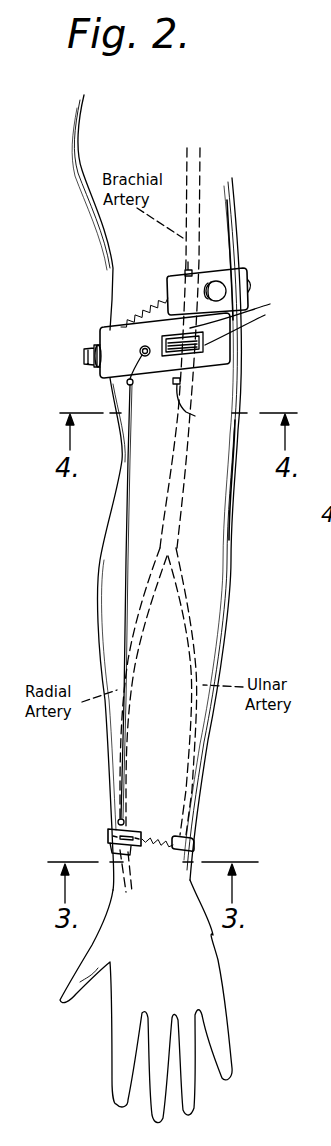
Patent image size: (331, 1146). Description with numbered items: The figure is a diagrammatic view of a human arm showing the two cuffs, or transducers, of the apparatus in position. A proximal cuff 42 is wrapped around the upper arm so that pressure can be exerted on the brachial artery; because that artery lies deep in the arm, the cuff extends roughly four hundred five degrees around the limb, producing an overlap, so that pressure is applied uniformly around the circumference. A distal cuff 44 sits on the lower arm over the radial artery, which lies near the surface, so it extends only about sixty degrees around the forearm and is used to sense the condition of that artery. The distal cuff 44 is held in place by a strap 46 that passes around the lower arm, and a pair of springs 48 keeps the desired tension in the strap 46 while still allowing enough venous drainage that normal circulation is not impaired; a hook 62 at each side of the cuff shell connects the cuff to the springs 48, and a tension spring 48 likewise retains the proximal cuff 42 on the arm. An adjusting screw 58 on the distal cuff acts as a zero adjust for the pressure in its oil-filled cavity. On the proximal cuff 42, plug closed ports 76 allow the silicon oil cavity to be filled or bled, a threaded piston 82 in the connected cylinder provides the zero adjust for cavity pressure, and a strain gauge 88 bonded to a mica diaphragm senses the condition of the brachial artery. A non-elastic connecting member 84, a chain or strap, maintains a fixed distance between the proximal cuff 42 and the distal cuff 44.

The proximal cuff 42 is at (163, 390).
The distal cuff 44 is at (140, 820).
The strap 46 is at (194, 845).
The springs 48 is at (137, 316).
The adjusting screw 58 is at (113, 847).
The hook 62 is at (172, 292).
The plug closed ports 76 is at (190, 270).
The piston 82 is at (133, 383).
The non-elastic connecting member 84 is at (126, 568).
The strain gauge 88 is at (202, 364).